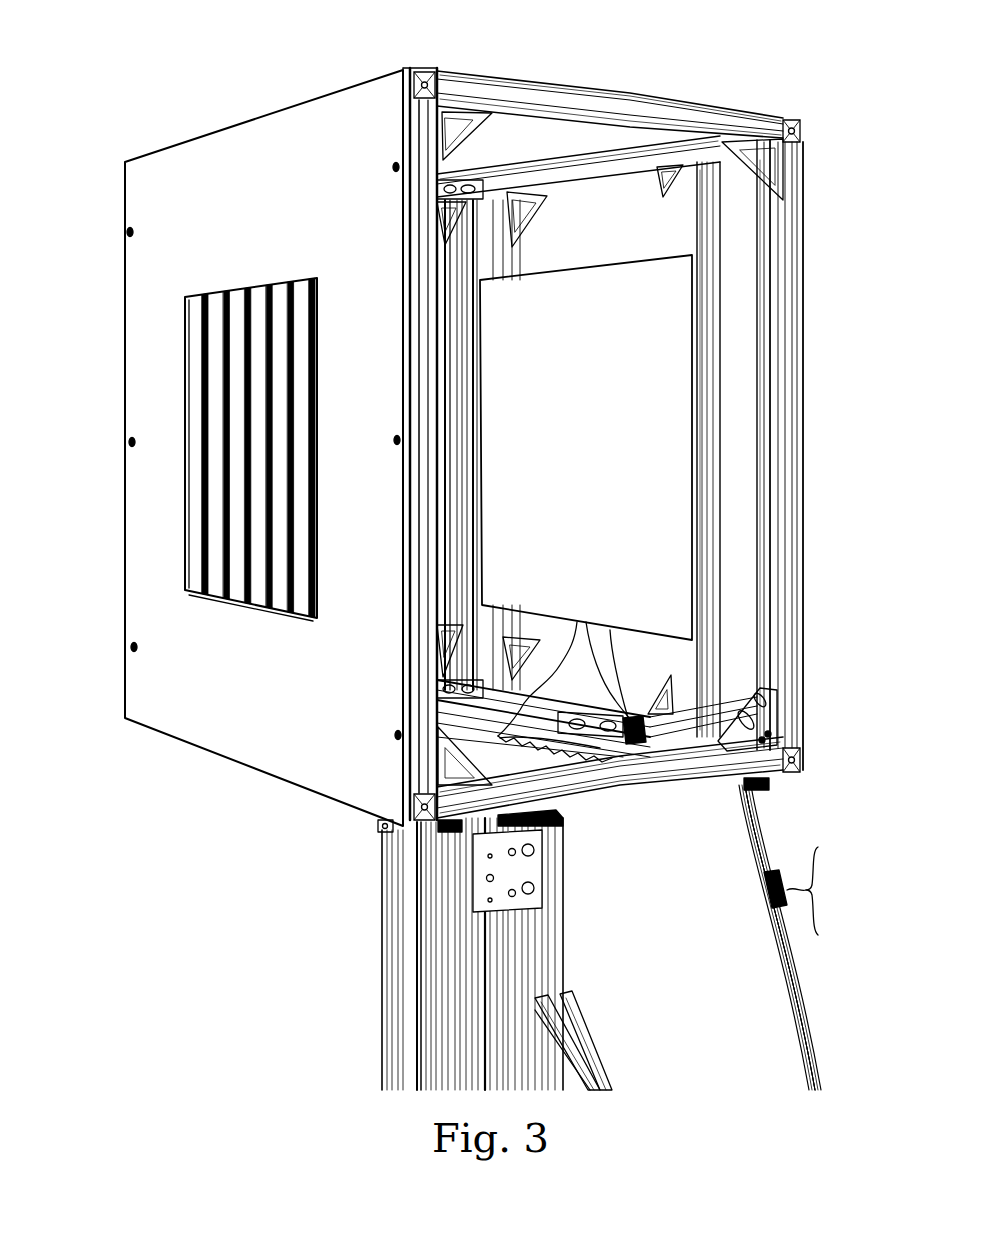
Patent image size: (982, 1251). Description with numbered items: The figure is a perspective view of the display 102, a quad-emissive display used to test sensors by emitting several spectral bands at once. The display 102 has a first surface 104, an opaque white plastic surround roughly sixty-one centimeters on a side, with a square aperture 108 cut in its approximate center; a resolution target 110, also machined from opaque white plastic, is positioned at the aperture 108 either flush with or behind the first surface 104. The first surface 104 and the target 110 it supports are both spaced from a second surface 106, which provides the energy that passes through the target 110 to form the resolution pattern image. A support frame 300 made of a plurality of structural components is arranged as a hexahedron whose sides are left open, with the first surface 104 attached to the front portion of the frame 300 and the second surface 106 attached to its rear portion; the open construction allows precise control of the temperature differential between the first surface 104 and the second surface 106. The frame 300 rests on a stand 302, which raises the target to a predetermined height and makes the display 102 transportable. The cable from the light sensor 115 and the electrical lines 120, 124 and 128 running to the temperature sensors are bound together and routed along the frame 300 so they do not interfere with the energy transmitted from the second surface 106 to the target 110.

The display 102 is at (731, 56).
The first surface 104 is at (194, 252).
The second surface 106 is at (600, 403).
The aperture 108 is at (262, 284).
The resolution target 110 is at (232, 373).
The support frame 300 is at (735, 598).
The stand 302 is at (406, 914).
The light sensor 115 is at (801, 937).
The electrical line 120 is at (804, 937).
The electrical line 124 is at (804, 937).
The electrical line 128 is at (804, 937).